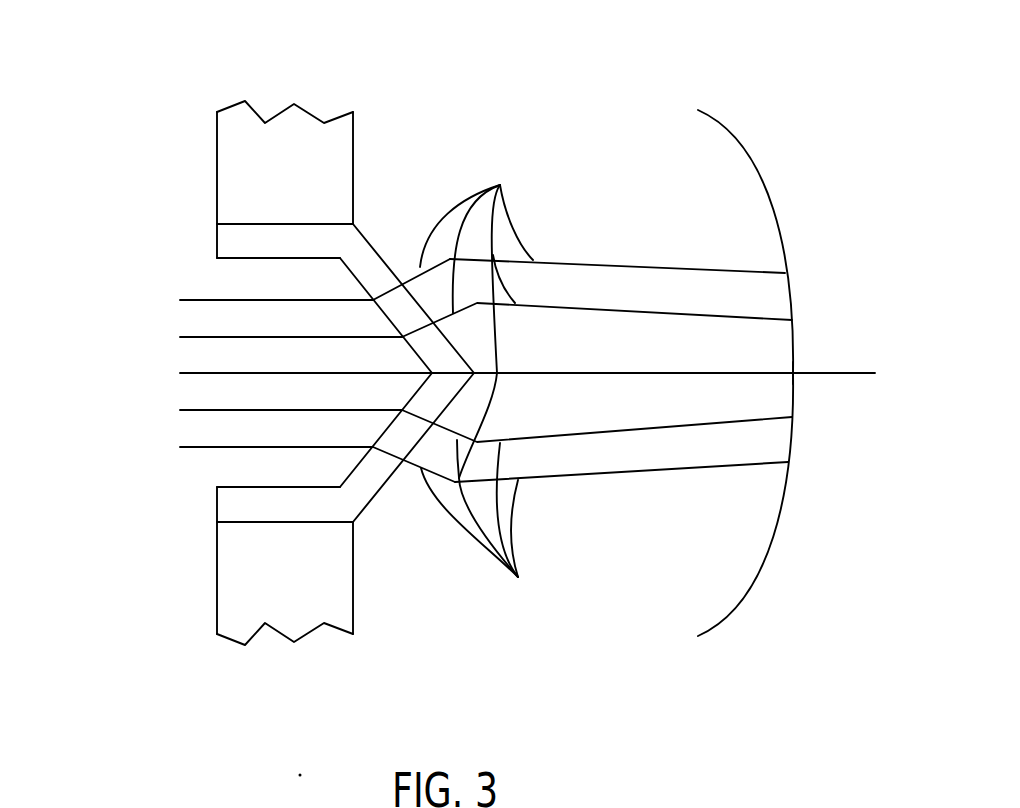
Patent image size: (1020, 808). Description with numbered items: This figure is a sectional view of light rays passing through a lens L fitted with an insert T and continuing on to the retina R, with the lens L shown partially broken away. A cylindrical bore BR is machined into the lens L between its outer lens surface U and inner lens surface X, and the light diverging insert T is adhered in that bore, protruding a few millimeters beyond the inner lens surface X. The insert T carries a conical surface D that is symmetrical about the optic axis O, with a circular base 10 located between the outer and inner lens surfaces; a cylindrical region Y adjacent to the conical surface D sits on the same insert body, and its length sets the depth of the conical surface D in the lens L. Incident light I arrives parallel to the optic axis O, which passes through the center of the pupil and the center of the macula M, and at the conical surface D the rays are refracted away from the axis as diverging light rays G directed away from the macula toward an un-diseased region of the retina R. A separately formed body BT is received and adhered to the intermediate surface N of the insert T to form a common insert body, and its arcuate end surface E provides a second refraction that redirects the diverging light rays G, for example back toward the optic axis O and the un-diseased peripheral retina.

The circular base 10 is at (341, 259).
The lens L is at (275, 138).
The inner lens surface X is at (355, 146).
The intermediate surface N is at (384, 262).
The diverging light rays G is at (484, 385).
The body BT is at (473, 342).
The end surface E is at (497, 363).
The retina R is at (758, 163).
The macula M is at (793, 373).
The optic axis O is at (740, 373).
The outer lens surface U is at (220, 172).
The cylindrical bore BR is at (255, 224).
The conical surface D is at (383, 315).
The incident light I is at (187, 447).
The light diverging insert T is at (216, 492).
The cylindrical region Y is at (247, 502).